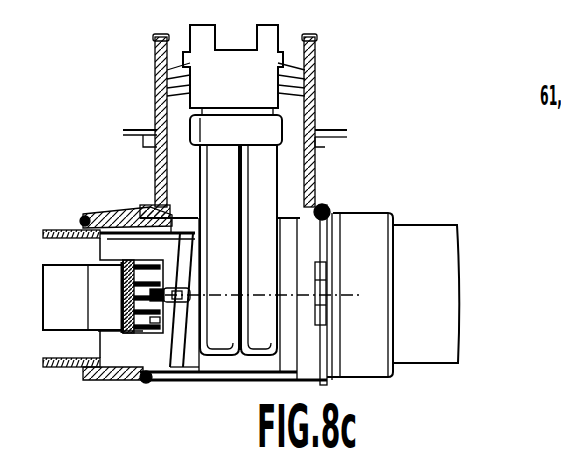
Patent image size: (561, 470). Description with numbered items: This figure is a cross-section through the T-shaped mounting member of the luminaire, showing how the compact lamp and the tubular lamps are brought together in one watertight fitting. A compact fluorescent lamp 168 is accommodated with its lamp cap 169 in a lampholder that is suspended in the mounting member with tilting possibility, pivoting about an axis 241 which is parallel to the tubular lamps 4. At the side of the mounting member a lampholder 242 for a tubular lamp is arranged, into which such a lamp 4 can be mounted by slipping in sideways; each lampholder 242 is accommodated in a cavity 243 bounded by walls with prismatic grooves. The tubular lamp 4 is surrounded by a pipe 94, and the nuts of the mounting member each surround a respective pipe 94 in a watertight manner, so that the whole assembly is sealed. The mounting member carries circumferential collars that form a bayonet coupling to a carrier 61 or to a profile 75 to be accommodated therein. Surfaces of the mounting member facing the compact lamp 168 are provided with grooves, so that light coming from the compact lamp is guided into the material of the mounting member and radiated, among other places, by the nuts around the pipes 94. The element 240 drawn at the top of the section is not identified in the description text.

The tubular lamp 4 is at (60, 316).
The pipe 94 is at (72, 366).
The carrier 61 is at (332, 130).
The profile 75 is at (205, 293).
The compact fluorescent lamp 168 is at (257, 185).
The lamp cap 169 is at (203, 127).
The cap 240 is at (267, 61).
The axis 241 is at (285, 95).
The lampholder 242 is at (143, 335).
The cavity 243 is at (175, 340).